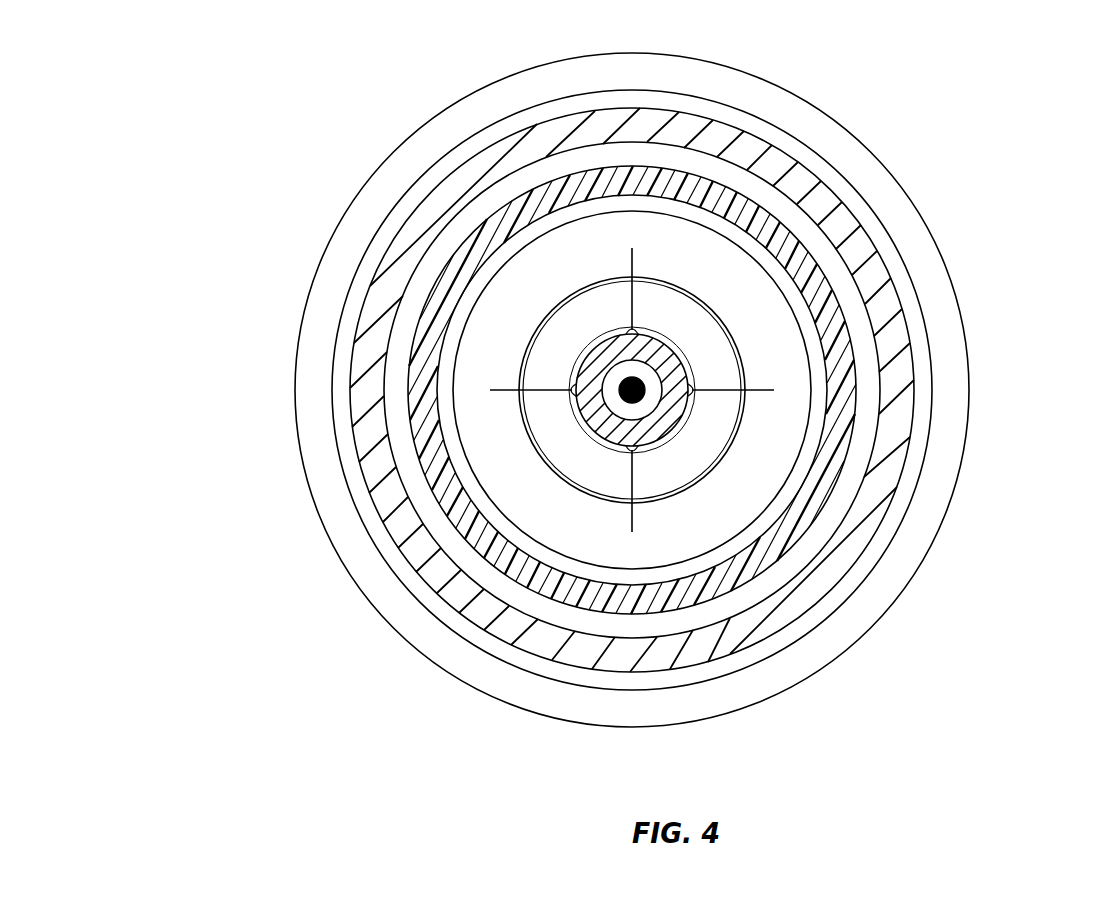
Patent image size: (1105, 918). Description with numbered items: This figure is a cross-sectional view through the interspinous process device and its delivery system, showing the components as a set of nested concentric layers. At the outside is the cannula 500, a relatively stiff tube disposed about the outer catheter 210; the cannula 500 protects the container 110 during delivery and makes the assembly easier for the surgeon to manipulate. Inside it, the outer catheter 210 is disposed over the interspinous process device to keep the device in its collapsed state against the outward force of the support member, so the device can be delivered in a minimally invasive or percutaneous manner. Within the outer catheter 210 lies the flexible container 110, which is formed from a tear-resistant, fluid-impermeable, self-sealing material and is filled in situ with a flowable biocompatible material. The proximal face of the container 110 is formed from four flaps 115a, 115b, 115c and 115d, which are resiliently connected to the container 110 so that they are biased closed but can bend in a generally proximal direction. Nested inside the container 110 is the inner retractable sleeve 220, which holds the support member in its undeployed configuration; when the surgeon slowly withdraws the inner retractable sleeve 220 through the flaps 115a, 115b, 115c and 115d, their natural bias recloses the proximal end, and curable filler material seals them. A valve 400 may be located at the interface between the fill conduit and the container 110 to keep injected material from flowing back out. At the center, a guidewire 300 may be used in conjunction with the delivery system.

The cannula 500 is at (788, 110).
The valve 400 is at (572, 342).
The outer catheter 210 is at (820, 208).
The inner retractable sleeve 220 is at (653, 403).
The container 110 is at (827, 337).
The flap 115a is at (537, 483).
The flap 115b is at (767, 468).
The flap 115c is at (722, 303).
The flap 115d is at (543, 353).
The guidewire 300 is at (645, 393).